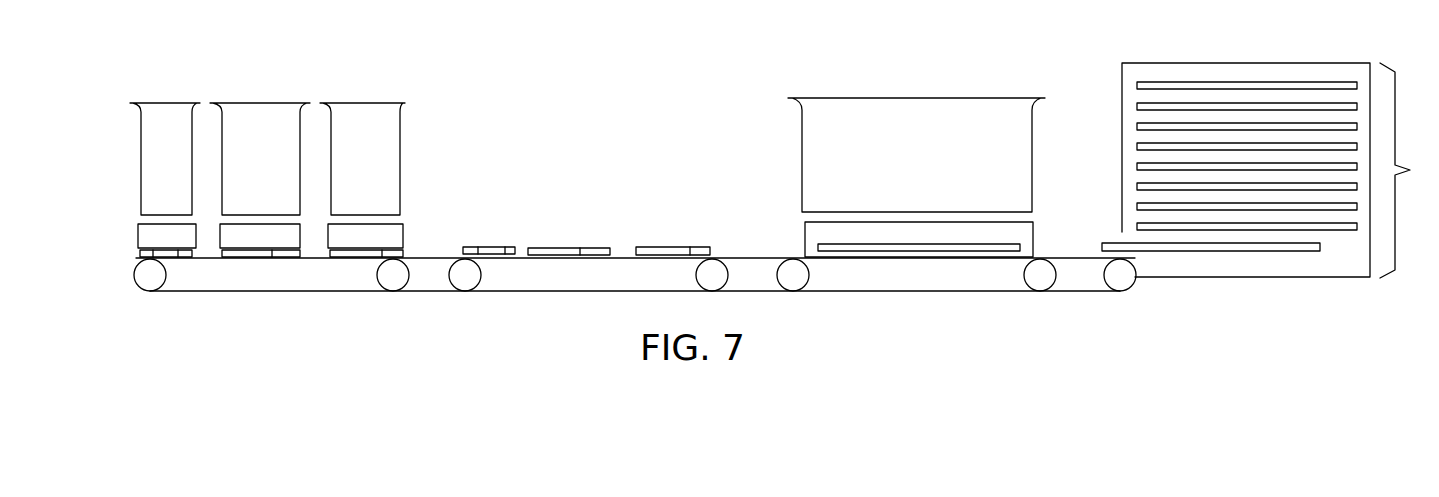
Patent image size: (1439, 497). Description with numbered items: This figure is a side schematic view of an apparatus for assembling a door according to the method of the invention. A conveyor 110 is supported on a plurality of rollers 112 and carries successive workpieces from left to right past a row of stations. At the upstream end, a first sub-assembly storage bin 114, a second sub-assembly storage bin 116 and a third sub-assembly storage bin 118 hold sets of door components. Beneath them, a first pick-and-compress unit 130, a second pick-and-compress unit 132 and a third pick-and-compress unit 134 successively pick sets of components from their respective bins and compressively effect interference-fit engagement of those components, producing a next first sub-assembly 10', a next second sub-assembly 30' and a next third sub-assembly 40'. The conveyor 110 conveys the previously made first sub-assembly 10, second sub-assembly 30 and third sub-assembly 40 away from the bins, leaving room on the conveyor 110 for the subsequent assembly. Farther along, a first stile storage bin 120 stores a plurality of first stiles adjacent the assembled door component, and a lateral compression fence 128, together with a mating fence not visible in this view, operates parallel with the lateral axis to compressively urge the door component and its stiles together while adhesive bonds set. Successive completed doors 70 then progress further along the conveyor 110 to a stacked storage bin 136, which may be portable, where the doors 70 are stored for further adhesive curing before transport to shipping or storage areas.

The first sub-assembly 10 is at (489, 206).
The second sub-assembly 30 is at (569, 206).
The third sub-assembly 40 is at (673, 206).
The next first sub-assembly 10' is at (130, 298).
The next second sub-assembly 30' is at (256, 307).
The next third sub-assembly 40' is at (356, 307).
The door 70 is at (1409, 170).
The conveyor 110 is at (930, 292).
The rollers 112 is at (150, 292).
The first sub-assembly storage bin 114 is at (163, 102).
The second sub-assembly storage bin 116 is at (262, 102).
The third sub-assembly storage bin 118 is at (357, 102).
The first stile storage bin 120 is at (918, 97).
The lateral compression fence 128 is at (1035, 245).
The first pick-and-compress unit 130 is at (134, 222).
The second pick-and-compress unit 132 is at (300, 240).
The third pick-and-compress unit 134 is at (404, 240).
The stacked storage bin 136 is at (1250, 62).